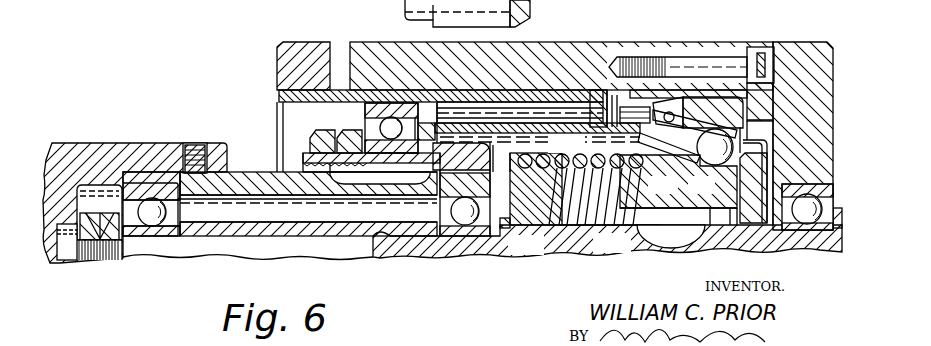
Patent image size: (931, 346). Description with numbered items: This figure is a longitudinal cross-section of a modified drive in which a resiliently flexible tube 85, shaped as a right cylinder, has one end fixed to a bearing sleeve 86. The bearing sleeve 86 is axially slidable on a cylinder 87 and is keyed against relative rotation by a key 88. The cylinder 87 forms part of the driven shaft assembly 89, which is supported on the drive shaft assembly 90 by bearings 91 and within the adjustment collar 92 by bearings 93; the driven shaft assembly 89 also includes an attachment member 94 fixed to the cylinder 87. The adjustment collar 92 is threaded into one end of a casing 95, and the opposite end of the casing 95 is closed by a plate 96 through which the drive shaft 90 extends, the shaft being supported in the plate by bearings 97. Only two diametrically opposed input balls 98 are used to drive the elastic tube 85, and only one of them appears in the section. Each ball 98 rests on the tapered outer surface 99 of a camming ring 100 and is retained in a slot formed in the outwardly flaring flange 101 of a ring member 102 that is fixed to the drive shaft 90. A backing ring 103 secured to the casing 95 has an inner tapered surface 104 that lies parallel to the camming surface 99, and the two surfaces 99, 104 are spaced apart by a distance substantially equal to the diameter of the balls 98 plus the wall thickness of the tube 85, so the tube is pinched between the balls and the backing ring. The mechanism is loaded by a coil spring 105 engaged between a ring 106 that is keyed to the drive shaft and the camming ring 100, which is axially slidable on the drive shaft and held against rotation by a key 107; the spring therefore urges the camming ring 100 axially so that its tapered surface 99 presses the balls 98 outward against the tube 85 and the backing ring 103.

The resiliently flexible tube 85 is at (508, 127).
The bearing sleeve 86 is at (307, 160).
The cylinder 87 is at (257, 163).
The key 88 is at (371, 178).
The driven shaft assembly 89 is at (108, 131).
The drive shaft assembly 90 is at (556, 246).
The bearings 91 is at (168, 237).
The adjustment collar 92 is at (288, 52).
The bearings 93 is at (387, 110).
The attachment member 94 is at (176, 143).
The casing 95 is at (590, 42).
The plate 96 is at (812, 42).
The bearings 97 is at (807, 230).
The input balls 98 is at (735, 150).
The tapered outer surface 99 is at (684, 163).
The camming ring 100 is at (610, 240).
The outwardly flaring flange 101 is at (666, 186).
The ring member 102 is at (750, 212).
The backing ring 103 is at (662, 107).
The inner tapered surface 104 is at (690, 120).
The coil spring 105 is at (588, 160).
The ring 106 is at (545, 227).
The key 107 is at (672, 240).